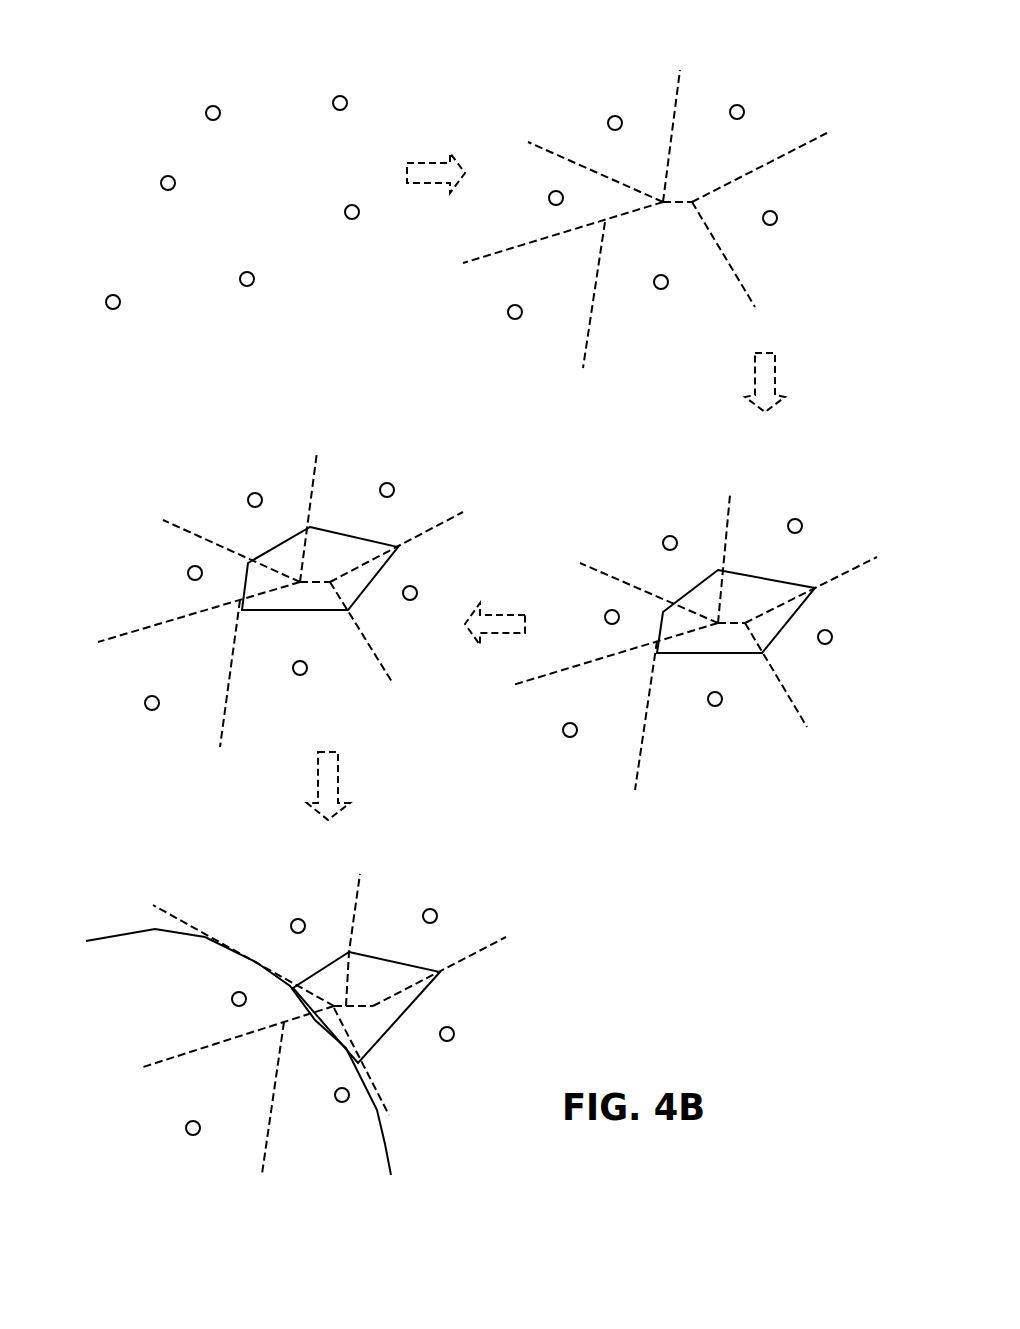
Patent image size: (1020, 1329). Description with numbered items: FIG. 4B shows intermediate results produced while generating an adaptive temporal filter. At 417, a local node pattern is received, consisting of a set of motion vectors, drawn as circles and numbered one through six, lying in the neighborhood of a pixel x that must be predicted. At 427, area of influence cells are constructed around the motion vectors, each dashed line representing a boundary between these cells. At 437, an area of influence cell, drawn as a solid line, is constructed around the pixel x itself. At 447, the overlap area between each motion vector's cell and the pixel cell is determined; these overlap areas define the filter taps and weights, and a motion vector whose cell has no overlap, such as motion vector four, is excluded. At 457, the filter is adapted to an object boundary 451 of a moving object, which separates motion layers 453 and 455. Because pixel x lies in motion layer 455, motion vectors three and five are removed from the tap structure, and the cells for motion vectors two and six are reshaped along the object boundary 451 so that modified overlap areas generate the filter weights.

The local node pattern reception stage 417 is at (157, 107).
The area of influence cell construction stage 427 is at (550, 93).
The pixel area of influence cell construction stage 437 is at (590, 532).
The overlap area determination stage 447 is at (130, 510).
The filter adaptation stage 457 is at (176, 880).
The object boundary 451 is at (140, 939).
The motion layer 453 is at (97, 1066).
The motion layer 455 is at (515, 1023).